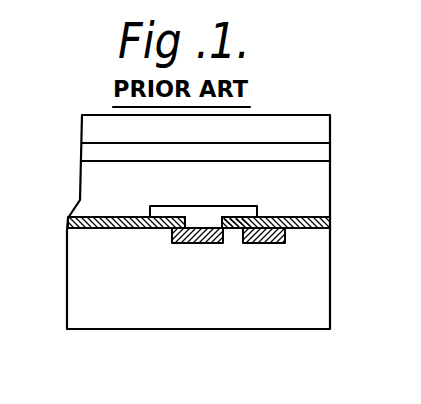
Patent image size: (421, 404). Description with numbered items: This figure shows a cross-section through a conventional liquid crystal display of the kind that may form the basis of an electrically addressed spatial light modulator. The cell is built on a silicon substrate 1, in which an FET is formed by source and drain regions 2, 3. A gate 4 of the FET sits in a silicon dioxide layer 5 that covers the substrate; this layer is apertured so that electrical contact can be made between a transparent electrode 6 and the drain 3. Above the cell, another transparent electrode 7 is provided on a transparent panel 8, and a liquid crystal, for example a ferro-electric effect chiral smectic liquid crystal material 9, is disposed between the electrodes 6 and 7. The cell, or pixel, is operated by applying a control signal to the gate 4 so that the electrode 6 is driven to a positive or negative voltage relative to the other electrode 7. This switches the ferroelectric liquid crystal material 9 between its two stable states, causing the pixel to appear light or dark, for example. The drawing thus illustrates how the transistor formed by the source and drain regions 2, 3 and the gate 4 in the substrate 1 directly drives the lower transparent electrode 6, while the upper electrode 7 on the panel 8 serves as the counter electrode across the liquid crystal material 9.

The silicon substrate 1 is at (308, 290).
The source region 2 is at (258, 243).
The drain region 3 is at (198, 243).
The gate 4 is at (235, 213).
The silicon dioxide layer 5 is at (333, 228).
The transparent electrode 6 is at (237, 218).
The transparent electrode 7 is at (316, 152).
The transparent panel 8 is at (315, 126).
The ferro-electric effect chiral smectic liquid crystal material 9 is at (98, 192).